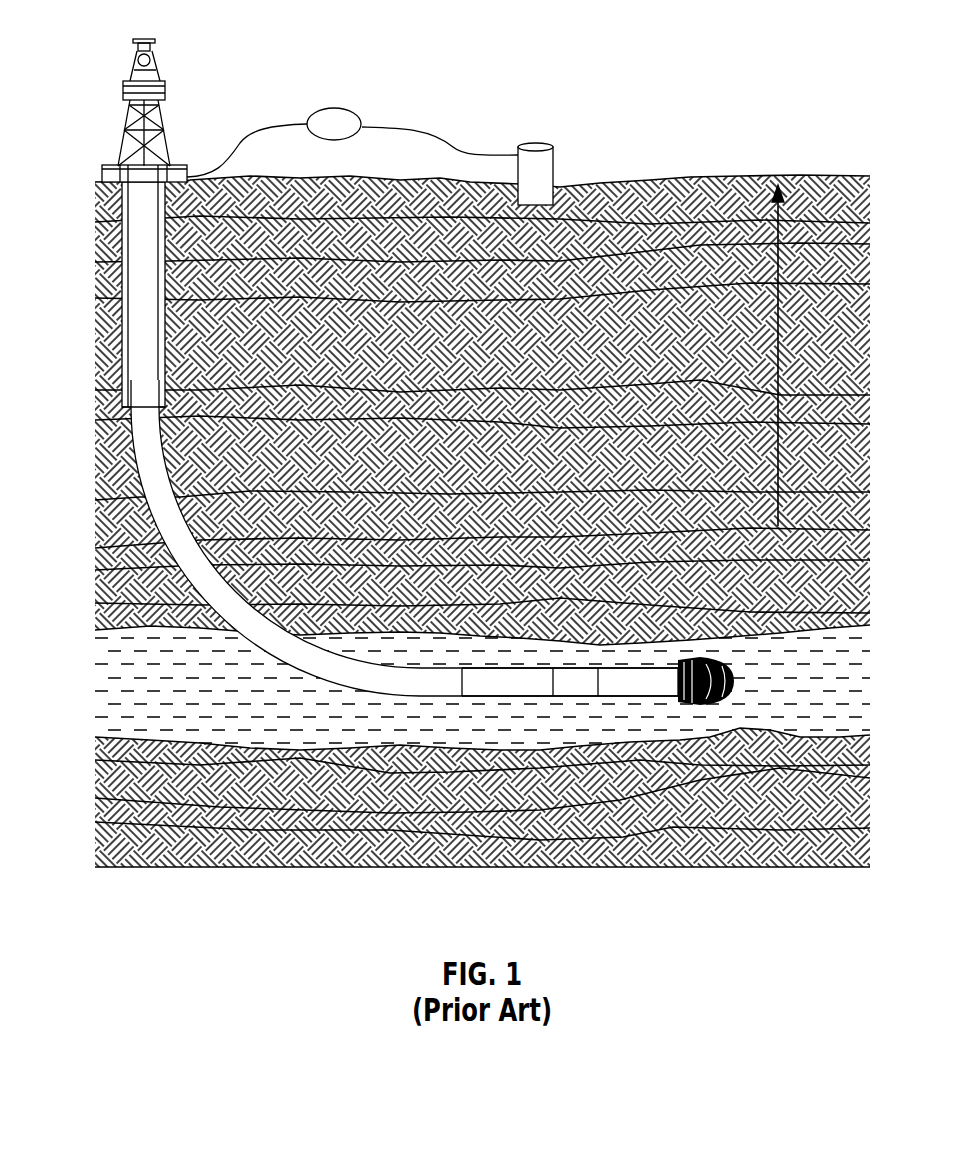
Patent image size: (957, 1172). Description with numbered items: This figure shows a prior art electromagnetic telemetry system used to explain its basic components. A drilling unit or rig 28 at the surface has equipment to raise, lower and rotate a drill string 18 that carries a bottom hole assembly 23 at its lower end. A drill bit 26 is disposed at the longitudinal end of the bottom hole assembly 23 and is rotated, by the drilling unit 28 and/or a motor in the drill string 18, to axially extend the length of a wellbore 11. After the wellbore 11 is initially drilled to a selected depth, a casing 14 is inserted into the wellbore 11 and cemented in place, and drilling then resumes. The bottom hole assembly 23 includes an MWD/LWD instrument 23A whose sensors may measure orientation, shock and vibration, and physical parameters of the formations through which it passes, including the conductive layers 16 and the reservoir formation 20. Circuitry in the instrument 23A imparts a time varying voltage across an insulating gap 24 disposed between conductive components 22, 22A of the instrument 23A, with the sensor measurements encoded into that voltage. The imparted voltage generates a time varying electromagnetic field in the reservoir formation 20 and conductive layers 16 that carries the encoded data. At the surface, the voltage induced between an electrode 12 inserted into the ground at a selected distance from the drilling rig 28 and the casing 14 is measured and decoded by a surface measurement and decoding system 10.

The surface measurement and decoding system 10 is at (356, 114).
The wellbore 11 is at (115, 488).
The electrode 12 is at (553, 165).
The casing 14 is at (168, 280).
The conductive layers 16 is at (778, 373).
The drill string 18 is at (176, 498).
The reservoir formation 20 is at (482, 797).
The conductive component 22 is at (480, 698).
The conductive component 22A is at (632, 696).
The bottom hole assembly 23 is at (508, 698).
The MWD/LWD instrument 23A is at (559, 668).
The insulating gap 24 is at (567, 696).
The drill bit 26 is at (698, 704).
The drilling unit 28 is at (143, 38).